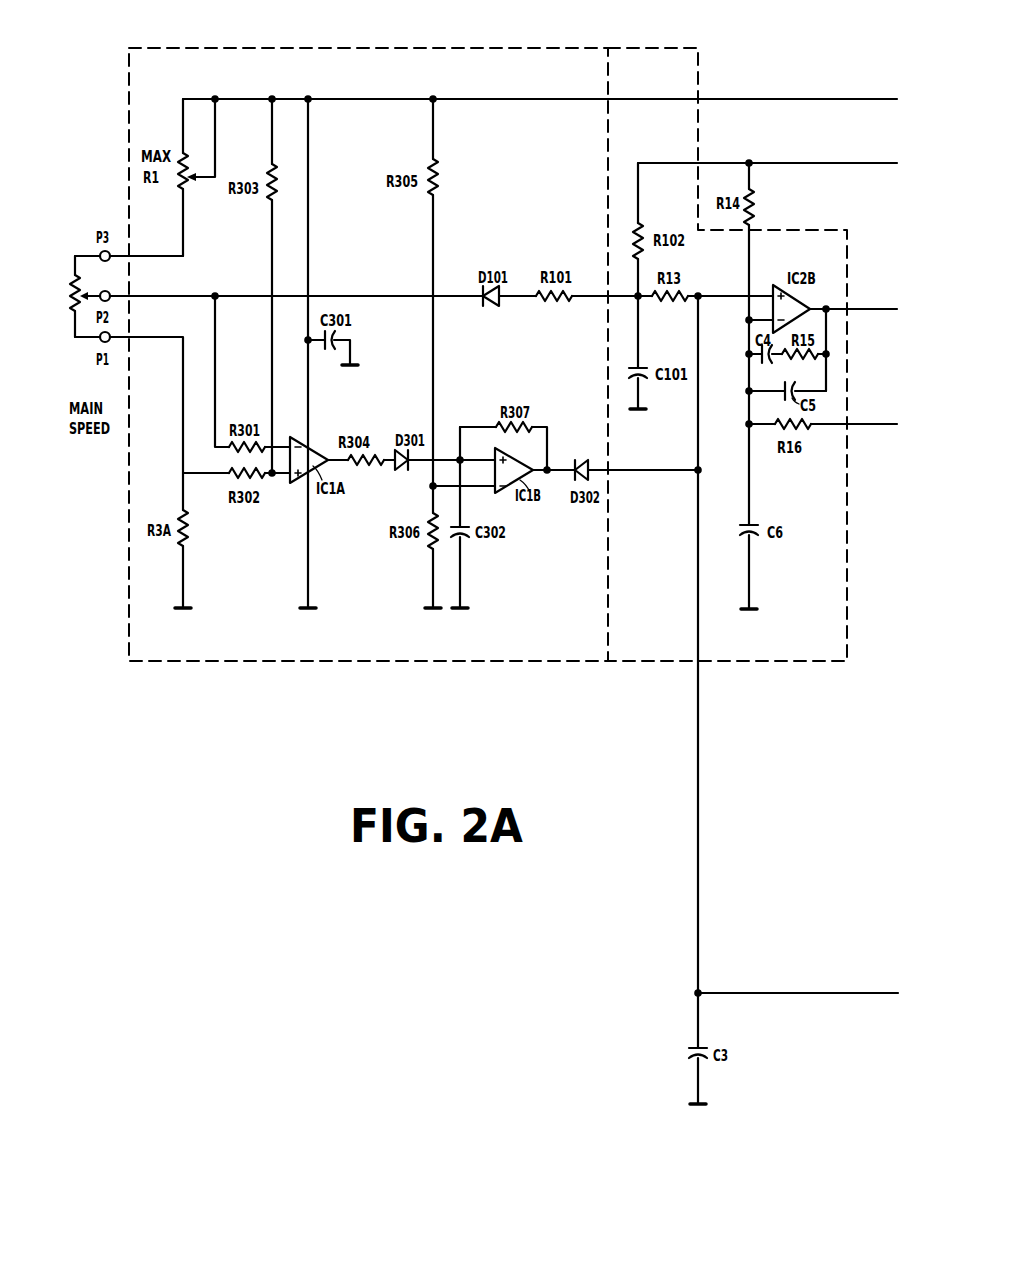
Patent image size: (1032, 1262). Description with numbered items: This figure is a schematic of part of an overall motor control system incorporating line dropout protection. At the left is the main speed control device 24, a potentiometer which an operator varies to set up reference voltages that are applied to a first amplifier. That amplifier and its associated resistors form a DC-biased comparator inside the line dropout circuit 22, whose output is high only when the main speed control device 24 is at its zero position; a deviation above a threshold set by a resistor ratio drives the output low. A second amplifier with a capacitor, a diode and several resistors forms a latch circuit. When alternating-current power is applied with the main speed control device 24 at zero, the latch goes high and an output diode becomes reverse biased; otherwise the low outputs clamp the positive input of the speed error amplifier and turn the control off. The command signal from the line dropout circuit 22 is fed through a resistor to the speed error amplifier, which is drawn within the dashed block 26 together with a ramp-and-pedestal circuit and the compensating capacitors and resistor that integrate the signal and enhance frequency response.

The line dropout circuit 22 is at (449, 48).
The main speed control device 24 is at (68, 282).
The output amplifier circuit block 26 is at (655, 48).